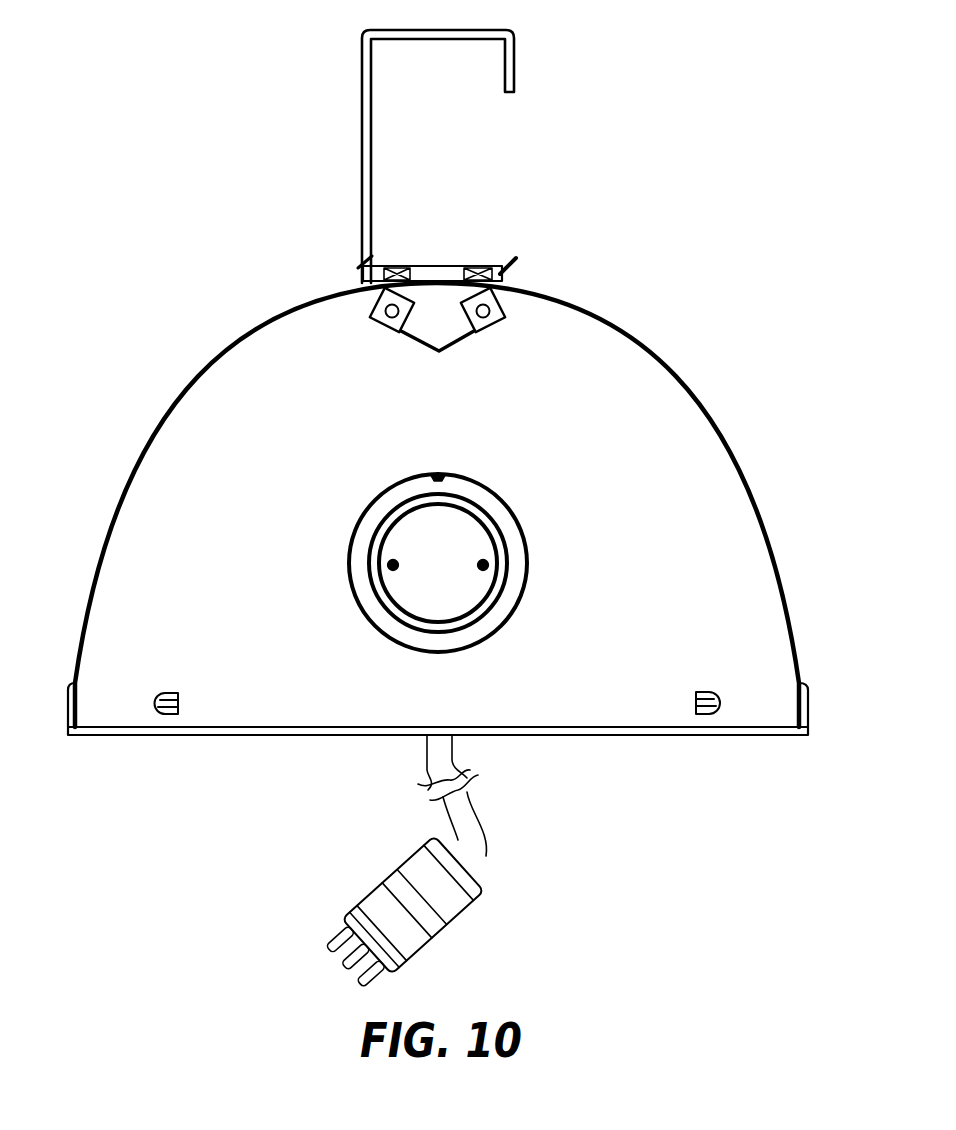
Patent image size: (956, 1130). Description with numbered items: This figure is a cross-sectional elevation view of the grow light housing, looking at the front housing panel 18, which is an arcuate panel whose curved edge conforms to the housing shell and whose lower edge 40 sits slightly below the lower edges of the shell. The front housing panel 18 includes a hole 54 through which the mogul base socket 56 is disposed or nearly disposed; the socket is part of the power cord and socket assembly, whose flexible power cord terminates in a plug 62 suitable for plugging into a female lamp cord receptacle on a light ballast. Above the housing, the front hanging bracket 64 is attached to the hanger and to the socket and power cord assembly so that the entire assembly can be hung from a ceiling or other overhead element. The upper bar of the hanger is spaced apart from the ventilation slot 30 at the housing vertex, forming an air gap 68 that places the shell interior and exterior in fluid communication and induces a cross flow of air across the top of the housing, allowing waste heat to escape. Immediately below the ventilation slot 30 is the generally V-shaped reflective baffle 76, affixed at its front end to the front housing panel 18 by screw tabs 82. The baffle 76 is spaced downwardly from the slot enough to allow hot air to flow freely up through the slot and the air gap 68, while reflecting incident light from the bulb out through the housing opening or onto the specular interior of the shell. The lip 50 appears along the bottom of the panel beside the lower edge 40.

The front housing panel 18 is at (705, 462).
The ventilation slot 30 is at (455, 258).
The lower edge of rear housing panel 40 is at (305, 735).
The flange 50 is at (177, 735).
The hole 54 is at (523, 530).
The mogul base socket 56 is at (490, 513).
The plug 62 is at (393, 863).
The front hanging bracket 64 is at (423, 40).
The air gap 68 is at (510, 277).
The reflective baffle 76 is at (410, 346).
The screw tabs 82 is at (373, 310).